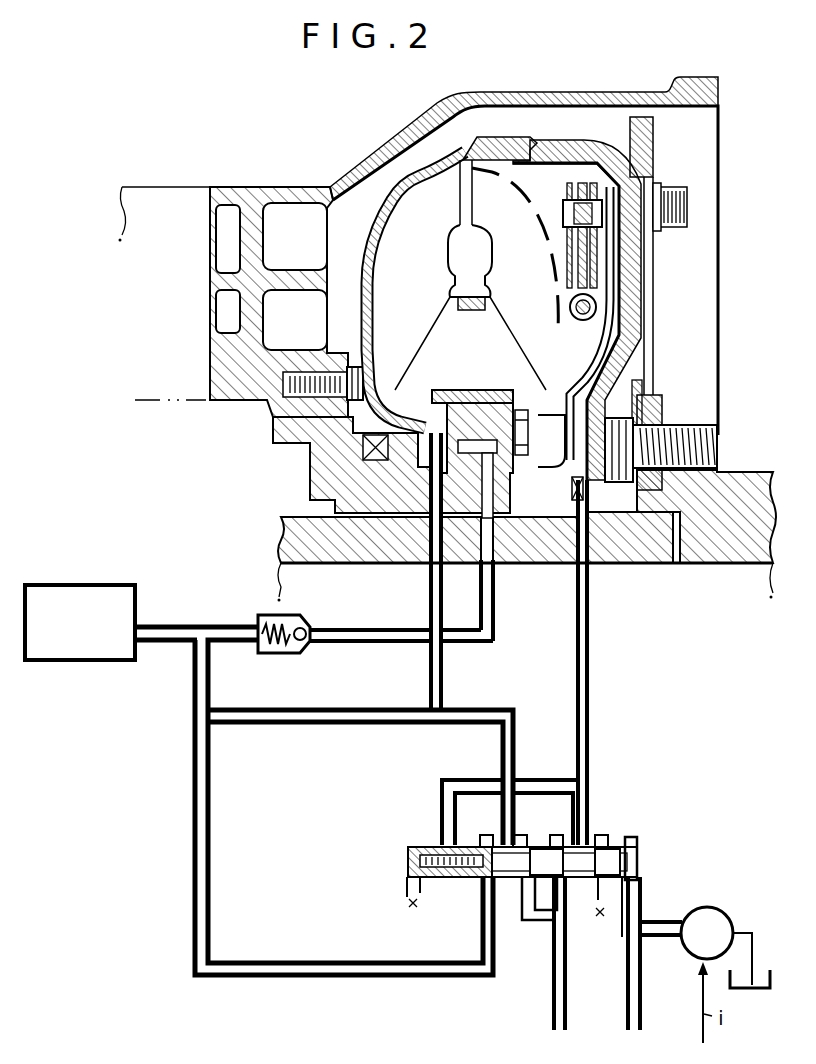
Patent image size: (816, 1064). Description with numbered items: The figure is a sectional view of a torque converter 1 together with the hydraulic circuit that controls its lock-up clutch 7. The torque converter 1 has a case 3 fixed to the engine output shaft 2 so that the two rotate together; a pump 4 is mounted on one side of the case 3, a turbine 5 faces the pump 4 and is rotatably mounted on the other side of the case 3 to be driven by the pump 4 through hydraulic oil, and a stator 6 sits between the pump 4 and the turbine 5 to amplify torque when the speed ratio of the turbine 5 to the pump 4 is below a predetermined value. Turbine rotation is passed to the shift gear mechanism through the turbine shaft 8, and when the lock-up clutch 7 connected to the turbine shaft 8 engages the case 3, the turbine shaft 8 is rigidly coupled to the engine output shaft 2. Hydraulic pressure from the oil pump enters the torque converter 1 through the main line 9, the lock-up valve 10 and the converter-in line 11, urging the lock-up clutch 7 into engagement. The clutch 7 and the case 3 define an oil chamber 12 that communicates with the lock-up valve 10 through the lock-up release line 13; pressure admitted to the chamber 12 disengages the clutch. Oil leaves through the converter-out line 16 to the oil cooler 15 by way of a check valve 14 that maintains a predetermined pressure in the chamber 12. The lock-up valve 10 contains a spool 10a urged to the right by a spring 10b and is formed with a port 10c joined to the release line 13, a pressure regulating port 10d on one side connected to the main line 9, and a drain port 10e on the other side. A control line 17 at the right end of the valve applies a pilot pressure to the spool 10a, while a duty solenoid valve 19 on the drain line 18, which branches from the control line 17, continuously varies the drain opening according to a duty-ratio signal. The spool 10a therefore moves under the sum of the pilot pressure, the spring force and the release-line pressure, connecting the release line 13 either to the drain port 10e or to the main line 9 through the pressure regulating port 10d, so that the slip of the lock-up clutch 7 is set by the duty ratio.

The torque converter 1 is at (565, 127).
The engine output shaft 2 is at (748, 487).
The case 3 is at (470, 155).
The pump 4 is at (420, 193).
The turbine 5 is at (498, 190).
The stator 6 is at (467, 330).
The lock-up clutch 7 is at (614, 292).
The turbine shaft 8 is at (393, 554).
The main line 9 is at (553, 1003).
The lock-up valve 10 is at (543, 871).
The spool 10a is at (613, 855).
The spring 10b is at (439, 843).
The port 10c is at (577, 836).
The pressure regulating port 10d is at (553, 893).
The drain port 10e is at (618, 897).
The converter-in line 11 is at (442, 680).
The oil chamber 12 is at (600, 362).
The lock-up release line 13 is at (588, 667).
The check valve 14 is at (283, 654).
The oil cooler 15 is at (128, 583).
The converter-out line 16 is at (492, 597).
The control line 17 is at (641, 1010).
The drain line 18 is at (663, 921).
The duty solenoid valve 19 is at (726, 908).